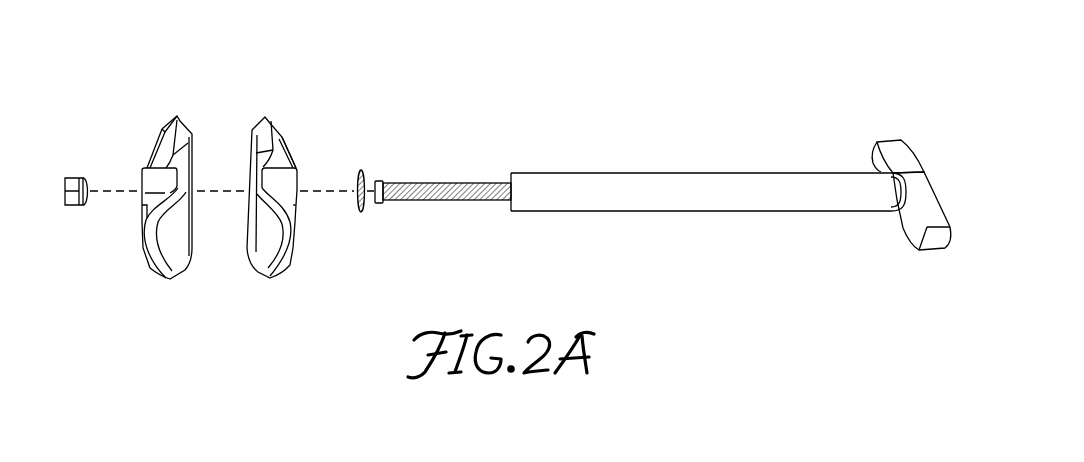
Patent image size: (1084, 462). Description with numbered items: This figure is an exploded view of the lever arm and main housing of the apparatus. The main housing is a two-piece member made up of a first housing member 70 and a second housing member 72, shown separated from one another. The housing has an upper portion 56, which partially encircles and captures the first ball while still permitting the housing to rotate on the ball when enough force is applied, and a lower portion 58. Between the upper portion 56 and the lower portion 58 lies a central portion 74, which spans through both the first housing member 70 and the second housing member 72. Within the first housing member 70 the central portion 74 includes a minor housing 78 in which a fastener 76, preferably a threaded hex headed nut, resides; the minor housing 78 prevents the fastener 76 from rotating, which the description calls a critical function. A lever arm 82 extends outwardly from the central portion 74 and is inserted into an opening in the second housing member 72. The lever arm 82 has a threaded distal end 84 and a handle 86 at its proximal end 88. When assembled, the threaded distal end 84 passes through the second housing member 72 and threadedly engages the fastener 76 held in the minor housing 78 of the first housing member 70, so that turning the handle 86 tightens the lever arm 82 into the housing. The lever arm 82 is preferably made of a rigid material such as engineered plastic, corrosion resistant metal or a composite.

The upper portion 56 is at (151, 199).
The lower portion 58 is at (176, 274).
The first housing member 70 is at (163, 131).
The second housing member 72 is at (308, 170).
The central portion 74 is at (293, 172).
The fastener 76 is at (73, 207).
The minor housing 78 is at (143, 177).
The lever arm 82 is at (672, 185).
The threaded distal end 84 is at (378, 203).
The handle 86 is at (928, 200).
The proximal end 88 is at (878, 164).